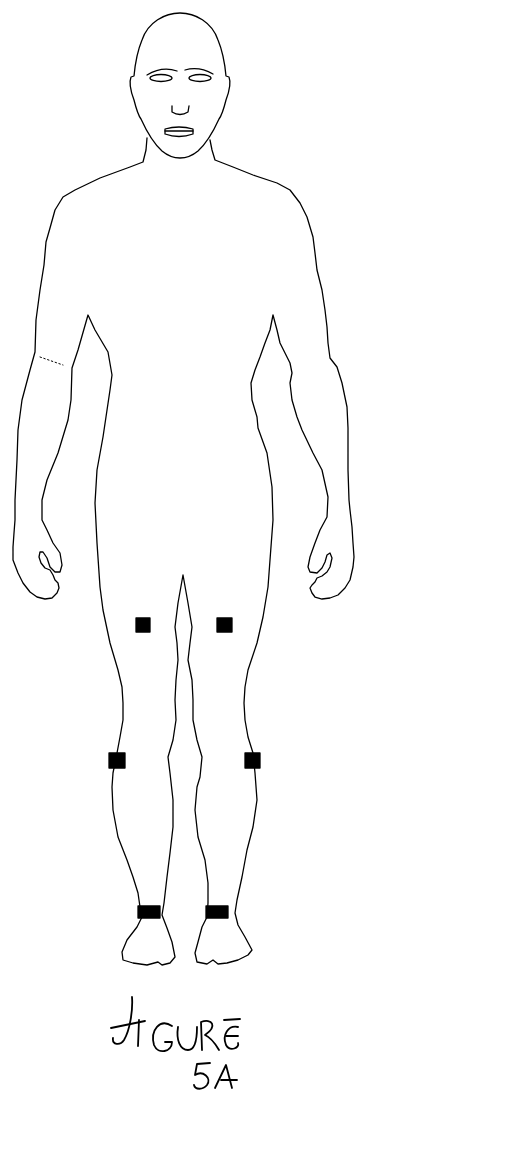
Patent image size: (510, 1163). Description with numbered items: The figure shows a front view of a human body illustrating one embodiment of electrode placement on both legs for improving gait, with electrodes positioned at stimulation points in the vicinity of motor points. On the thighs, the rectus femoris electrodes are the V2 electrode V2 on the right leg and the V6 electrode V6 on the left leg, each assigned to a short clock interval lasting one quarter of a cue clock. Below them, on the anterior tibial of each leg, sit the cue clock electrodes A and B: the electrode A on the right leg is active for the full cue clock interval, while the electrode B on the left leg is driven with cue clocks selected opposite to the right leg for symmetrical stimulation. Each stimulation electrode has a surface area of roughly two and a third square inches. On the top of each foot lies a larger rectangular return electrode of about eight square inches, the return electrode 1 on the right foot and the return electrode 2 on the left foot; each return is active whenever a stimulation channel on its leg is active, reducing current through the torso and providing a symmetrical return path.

The V2 clock interval electrode V2 is at (127, 628).
The V6 clock interval electrode V6 is at (244, 628).
The cue clock A electrode A is at (104, 761).
The cue clock B electrode B is at (269, 761).
The Return 1 electrode 1 is at (120, 913).
The Return 2 electrode 2 is at (251, 913).